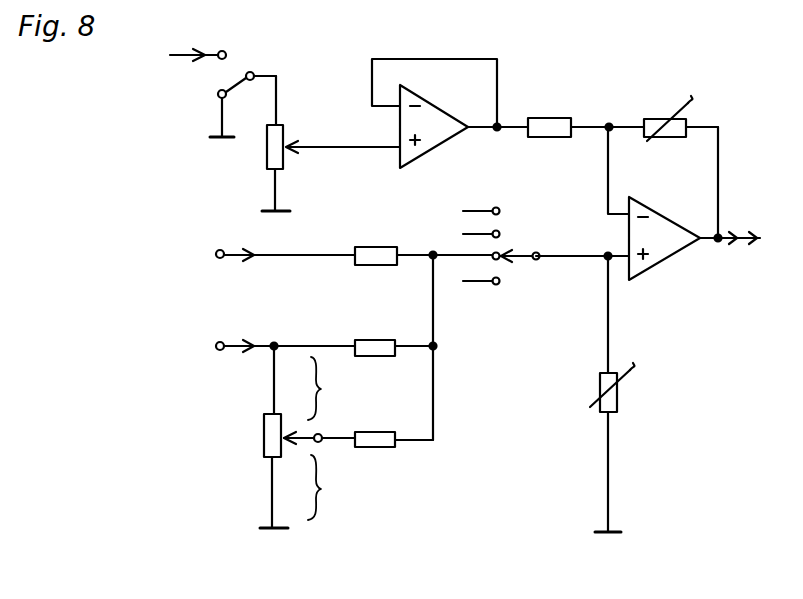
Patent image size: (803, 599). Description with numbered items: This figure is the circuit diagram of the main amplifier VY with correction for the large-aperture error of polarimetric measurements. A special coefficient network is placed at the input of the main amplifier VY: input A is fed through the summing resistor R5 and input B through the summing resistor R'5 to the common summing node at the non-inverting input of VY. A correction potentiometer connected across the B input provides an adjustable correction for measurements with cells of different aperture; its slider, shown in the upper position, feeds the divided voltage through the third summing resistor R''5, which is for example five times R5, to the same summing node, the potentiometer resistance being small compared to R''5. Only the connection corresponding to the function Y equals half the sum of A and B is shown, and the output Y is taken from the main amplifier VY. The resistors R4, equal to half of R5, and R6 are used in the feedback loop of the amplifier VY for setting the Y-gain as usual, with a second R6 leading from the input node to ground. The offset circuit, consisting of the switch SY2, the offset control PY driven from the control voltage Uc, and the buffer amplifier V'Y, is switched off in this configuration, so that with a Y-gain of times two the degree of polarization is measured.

The control voltage input Uc is at (185, 39).
The switch SY2 is at (382, 151).
The offset control PY is at (331, 168).
The buffer amplifier V'Y is at (450, 92).
The resistor R4 is at (585, 110).
The resistor R6 is at (654, 307).
The main amplifier VY is at (648, 203).
The output function Y is at (745, 256).
The input signal A is at (265, 253).
The summing resistor R5 is at (423, 328).
The input signal B is at (268, 346).
The summing resistor R'5 is at (396, 333).
The summing resistor R''5 is at (377, 425).